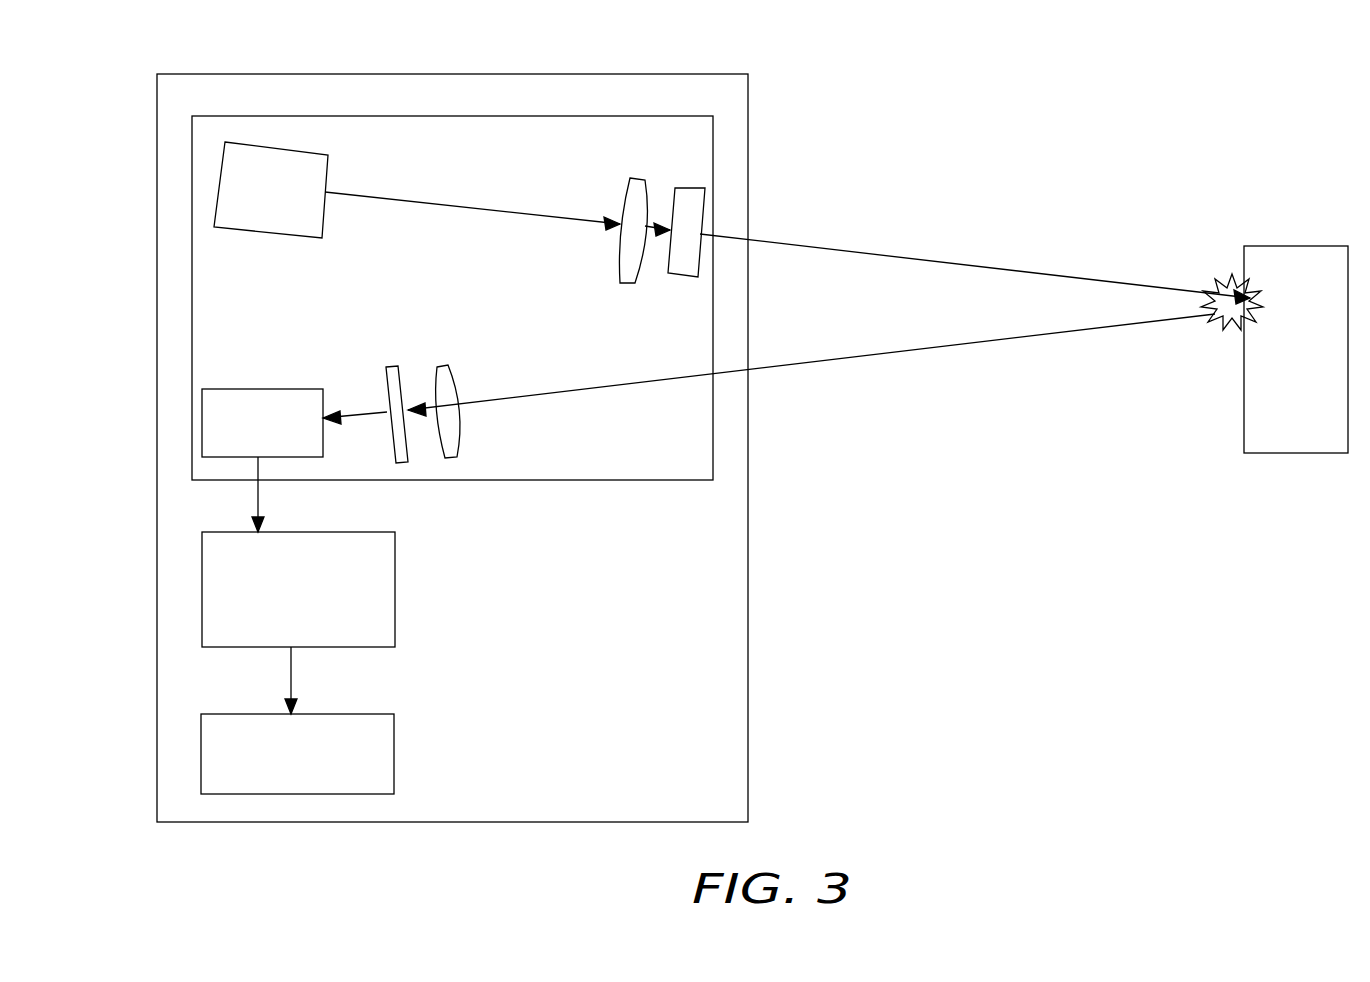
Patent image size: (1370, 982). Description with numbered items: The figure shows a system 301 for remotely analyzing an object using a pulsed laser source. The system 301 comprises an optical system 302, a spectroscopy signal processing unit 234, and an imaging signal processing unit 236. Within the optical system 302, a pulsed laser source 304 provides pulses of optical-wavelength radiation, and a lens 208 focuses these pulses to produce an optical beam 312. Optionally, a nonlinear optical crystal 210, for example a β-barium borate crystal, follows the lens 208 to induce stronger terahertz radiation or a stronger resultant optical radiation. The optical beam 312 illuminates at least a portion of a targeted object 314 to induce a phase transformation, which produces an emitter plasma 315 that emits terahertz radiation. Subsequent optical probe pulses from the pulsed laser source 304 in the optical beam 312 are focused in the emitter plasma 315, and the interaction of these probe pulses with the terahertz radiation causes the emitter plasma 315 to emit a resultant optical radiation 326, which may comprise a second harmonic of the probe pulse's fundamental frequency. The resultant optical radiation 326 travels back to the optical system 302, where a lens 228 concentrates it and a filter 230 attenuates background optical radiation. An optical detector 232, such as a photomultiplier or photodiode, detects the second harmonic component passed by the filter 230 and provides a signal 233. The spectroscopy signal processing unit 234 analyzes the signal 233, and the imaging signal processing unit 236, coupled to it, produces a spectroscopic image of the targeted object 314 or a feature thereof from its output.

The system 301 is at (527, 433).
The optical system 302 is at (452, 249).
The pulsed laser source 304 is at (330, 186).
The lens 208 is at (593, 208).
The nonlinear optical crystal 210 is at (673, 203).
The optical beam 312 is at (975, 246).
The targeted object 314 is at (1307, 309).
The emitter plasma 315 is at (1220, 265).
The resultant optical radiation 326 is at (811, 373).
The lens 228 is at (495, 398).
The filter 230 is at (430, 383).
The optical detector 232 is at (262, 387).
The signal 233 is at (319, 494).
The spectroscopy signal processing unit 234 is at (359, 589).
The imaging signal processing unit 236 is at (360, 754).